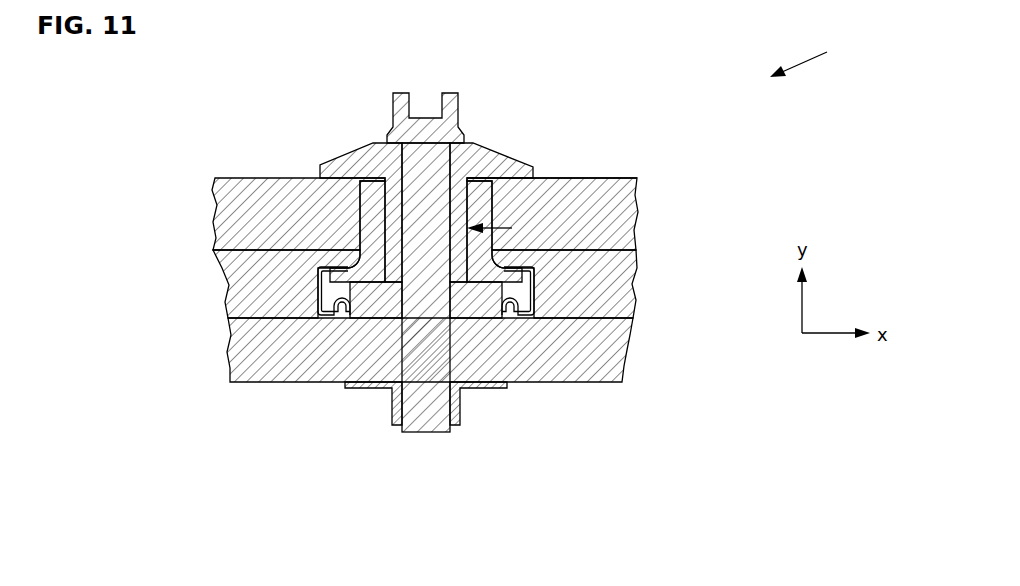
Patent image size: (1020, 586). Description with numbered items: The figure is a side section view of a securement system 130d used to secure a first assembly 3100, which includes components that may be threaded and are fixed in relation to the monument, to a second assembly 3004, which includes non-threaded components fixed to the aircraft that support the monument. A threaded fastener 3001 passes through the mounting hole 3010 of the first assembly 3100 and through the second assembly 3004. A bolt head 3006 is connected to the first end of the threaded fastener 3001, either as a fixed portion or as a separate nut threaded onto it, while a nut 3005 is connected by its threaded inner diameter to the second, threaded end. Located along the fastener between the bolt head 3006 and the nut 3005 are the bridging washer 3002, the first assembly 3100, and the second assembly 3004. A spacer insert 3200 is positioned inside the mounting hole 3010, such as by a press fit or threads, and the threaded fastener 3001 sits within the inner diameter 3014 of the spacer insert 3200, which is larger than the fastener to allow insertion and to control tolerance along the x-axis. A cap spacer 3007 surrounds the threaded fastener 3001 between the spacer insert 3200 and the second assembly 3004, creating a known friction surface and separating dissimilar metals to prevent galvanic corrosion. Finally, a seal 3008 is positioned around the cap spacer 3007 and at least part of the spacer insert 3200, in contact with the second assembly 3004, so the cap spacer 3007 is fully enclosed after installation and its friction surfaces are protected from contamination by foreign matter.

The bolt head 3006 is at (458, 120).
The threaded fastener 3001 is at (425, 420).
The bridging washer 3002 is at (322, 166).
The inner diameter 3014 is at (374, 227).
The mounting hole 3010 is at (317, 192).
The first assembly 3100 is at (560, 177).
The spacer insert 3200 is at (498, 213).
The seal 3008 is at (547, 272).
The second assembly 3004 is at (258, 388).
The cap spacer 3007 is at (315, 384).
The nut 3005 is at (465, 397).
The securement system 130d is at (829, 51).